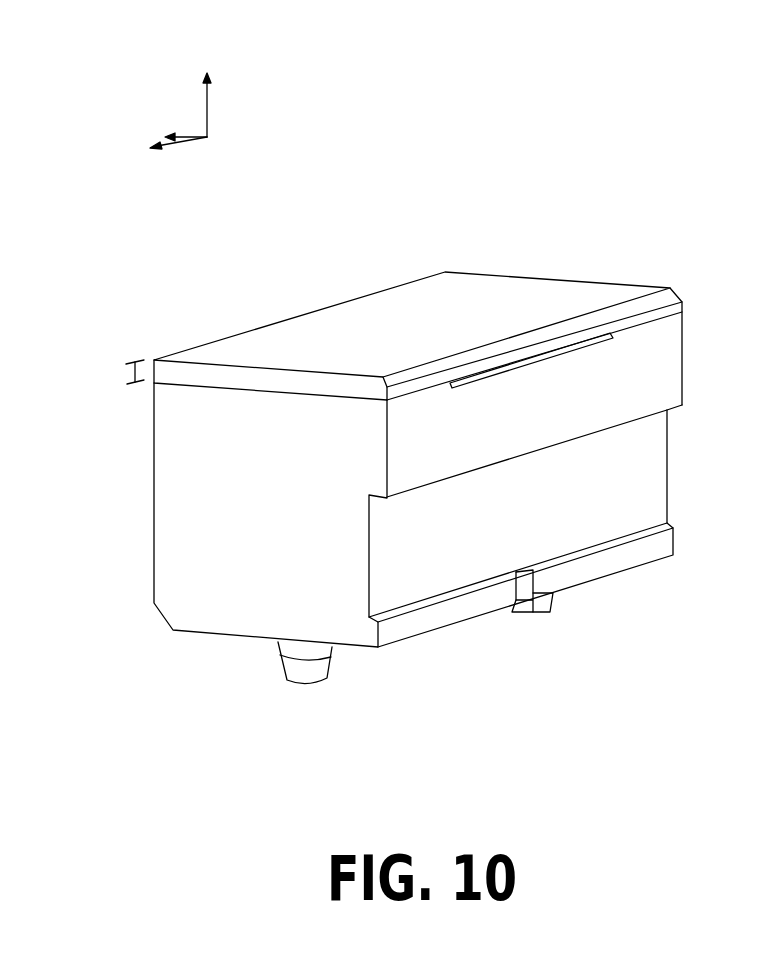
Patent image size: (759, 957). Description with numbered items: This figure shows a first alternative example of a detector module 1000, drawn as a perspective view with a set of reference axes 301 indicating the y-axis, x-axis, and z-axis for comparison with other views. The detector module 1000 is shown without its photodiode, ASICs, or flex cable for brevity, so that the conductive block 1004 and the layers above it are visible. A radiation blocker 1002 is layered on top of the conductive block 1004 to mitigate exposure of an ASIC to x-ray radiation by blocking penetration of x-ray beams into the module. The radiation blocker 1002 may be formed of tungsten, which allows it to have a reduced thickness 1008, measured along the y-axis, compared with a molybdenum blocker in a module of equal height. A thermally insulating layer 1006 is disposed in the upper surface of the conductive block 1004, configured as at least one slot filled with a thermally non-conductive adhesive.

The reference axes 301 is at (174, 102).
The detector module 1000 is at (320, 212).
The radiation blocker 1002 is at (304, 325).
The conductive block 1004 is at (258, 528).
The thermally insulating layer 1006 is at (518, 367).
The thickness 1008 is at (133, 362).